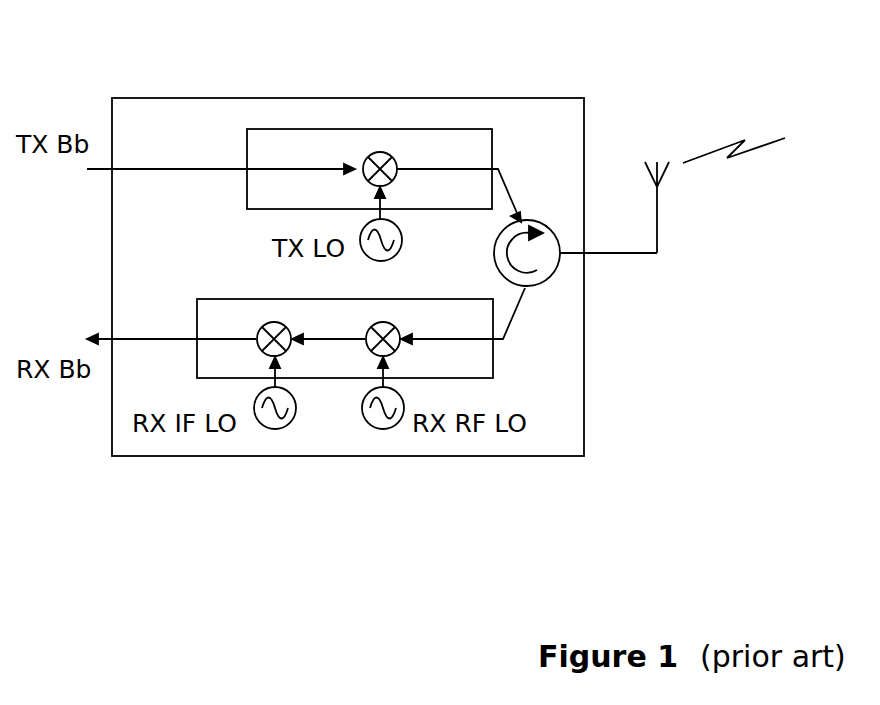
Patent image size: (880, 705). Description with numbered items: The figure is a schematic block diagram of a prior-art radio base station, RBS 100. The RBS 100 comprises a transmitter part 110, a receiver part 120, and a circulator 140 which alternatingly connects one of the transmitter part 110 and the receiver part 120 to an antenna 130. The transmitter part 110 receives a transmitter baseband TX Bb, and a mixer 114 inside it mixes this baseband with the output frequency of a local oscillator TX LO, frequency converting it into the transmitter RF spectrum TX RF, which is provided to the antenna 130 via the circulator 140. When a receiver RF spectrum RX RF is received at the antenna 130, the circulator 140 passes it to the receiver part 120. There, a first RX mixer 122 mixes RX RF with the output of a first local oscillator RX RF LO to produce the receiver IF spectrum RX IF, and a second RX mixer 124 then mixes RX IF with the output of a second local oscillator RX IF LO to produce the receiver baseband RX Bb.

The RBS (radio base station) 100 is at (275, 98).
The transmitter part (TX) 110 is at (468, 129).
The mixer 114 is at (378, 152).
The circulator 140 is at (540, 222).
The antenna 130 is at (657, 238).
The receiver part (RX) 120 is at (493, 358).
The first RX mixer 122 is at (413, 330).
The second RX mixer 124 is at (301, 330).